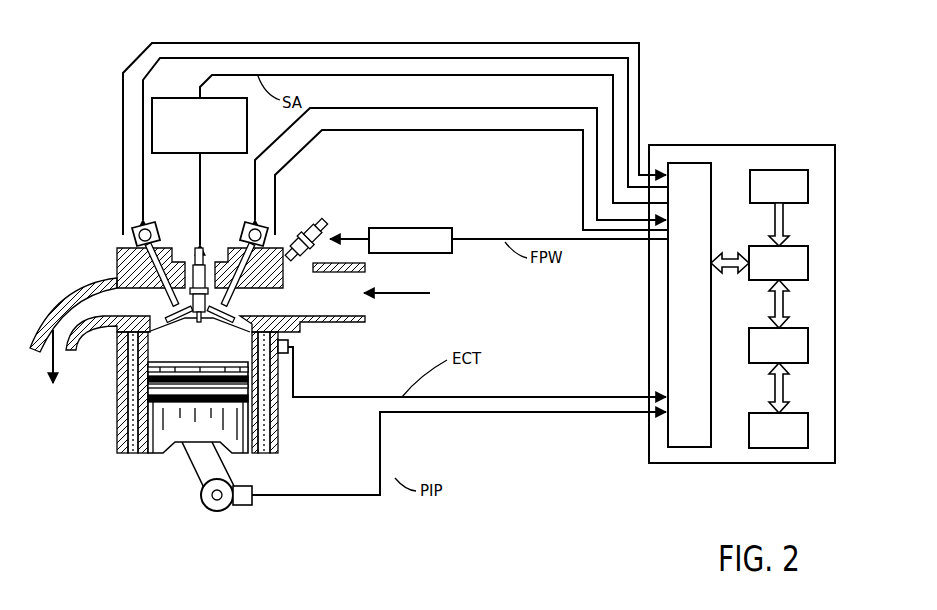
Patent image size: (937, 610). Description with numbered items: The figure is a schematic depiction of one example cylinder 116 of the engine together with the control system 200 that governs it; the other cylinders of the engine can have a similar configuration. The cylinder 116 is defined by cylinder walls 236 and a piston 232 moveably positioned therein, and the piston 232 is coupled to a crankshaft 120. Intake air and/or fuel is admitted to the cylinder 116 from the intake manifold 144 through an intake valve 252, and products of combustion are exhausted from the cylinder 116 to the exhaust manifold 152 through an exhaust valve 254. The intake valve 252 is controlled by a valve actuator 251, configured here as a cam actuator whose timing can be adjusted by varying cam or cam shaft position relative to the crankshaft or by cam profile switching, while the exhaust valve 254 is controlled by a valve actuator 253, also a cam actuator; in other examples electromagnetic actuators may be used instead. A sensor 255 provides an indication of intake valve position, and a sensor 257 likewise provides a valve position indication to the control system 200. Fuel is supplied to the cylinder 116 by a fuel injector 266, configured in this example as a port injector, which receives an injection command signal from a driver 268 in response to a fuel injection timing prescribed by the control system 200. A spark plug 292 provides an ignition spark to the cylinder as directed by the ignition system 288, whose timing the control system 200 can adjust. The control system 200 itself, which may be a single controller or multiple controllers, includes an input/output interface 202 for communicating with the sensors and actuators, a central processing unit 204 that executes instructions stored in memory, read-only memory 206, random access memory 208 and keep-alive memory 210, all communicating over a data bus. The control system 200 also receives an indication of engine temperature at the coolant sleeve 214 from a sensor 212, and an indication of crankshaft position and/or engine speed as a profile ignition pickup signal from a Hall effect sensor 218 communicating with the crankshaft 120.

The cylinder 116 is at (210, 354).
The crankshaft 120 is at (208, 510).
The intake manifold 144 is at (349, 304).
The exhaust manifold 152 is at (110, 308).
The control system 200 is at (835, 145).
The input/output interface 202 is at (712, 170).
The central processing unit 204 is at (808, 258).
The read-only memory 206 is at (808, 185).
The random access memory 208 is at (808, 340).
The keep-alive memory 210 is at (808, 425).
The sensor 212 is at (290, 346).
The coolant sleeve 214 is at (266, 410).
The Hall effect sensor 218 is at (246, 507).
The piston 232 is at (160, 455).
The cylinder walls 236 is at (193, 427).
The valve actuator 251 is at (258, 253).
The intake valve 252 is at (236, 310).
The valve actuator 253 is at (135, 253).
The exhaust valve 254 is at (165, 305).
The sensor 255 is at (278, 248).
The sensor 257 is at (128, 238).
The fuel injector 266 is at (305, 250).
The driver 268 is at (425, 228).
The ignition system 288 is at (160, 98).
The spark plug 292 is at (206, 270).